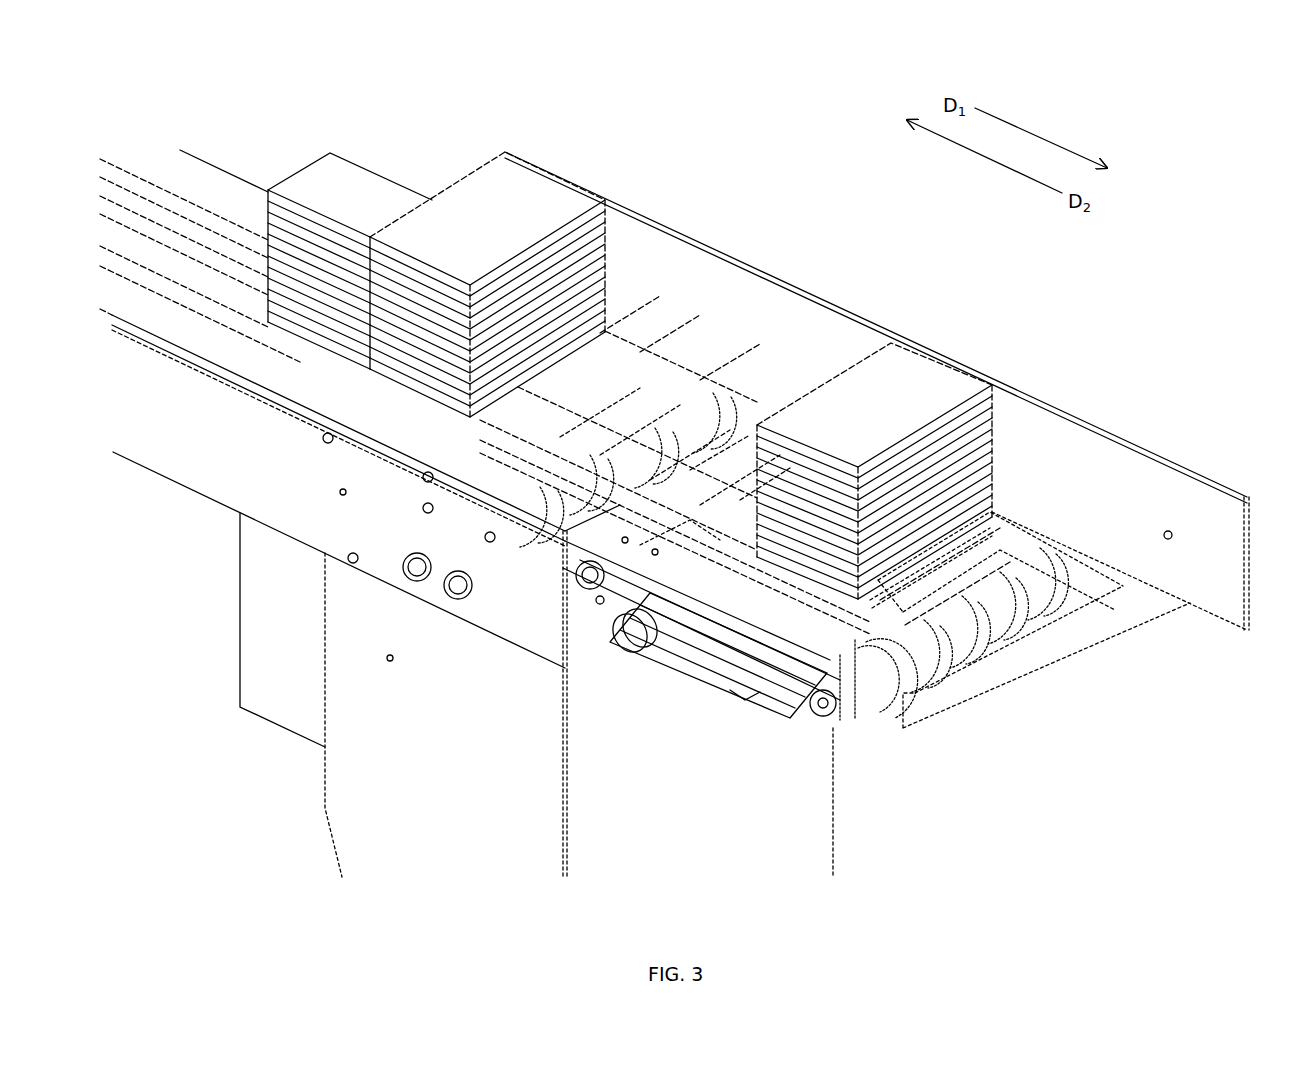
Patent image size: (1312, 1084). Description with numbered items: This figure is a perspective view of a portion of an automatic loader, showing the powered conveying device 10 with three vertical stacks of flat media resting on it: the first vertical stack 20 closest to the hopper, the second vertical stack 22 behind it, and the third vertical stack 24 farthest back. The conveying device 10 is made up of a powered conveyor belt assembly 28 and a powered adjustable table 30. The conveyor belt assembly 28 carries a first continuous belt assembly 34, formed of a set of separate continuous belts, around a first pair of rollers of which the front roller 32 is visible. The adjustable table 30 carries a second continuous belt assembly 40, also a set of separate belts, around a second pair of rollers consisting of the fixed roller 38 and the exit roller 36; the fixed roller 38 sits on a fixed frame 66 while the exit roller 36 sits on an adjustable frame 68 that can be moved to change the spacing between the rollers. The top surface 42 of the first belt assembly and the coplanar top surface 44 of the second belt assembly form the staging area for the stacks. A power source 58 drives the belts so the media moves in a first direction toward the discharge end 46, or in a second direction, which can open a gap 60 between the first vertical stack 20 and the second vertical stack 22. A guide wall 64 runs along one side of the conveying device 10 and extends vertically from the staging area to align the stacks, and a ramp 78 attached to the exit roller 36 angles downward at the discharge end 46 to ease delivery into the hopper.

The powered conveying device 10 is at (1203, 137).
The first vertical stack 20 is at (895, 385).
The second vertical stack 22 is at (506, 212).
The third vertical stack 24 is at (408, 168).
The powered conveyor belt assembly 28 is at (187, 432).
The powered adjustable table 30 is at (650, 550).
The front roller 32 is at (705, 420).
The first continuous belt assembly 34 is at (665, 355).
The exit roller 36 is at (1030, 598).
The fixed roller 38 is at (740, 445).
The second continuous belt assembly 40 is at (1052, 545).
The top surface 42 is at (230, 225).
The top surface 44 is at (935, 560).
The discharge end 46 is at (1075, 677).
The power source 58 is at (287, 642).
The gap 60 is at (705, 290).
The guide wall 64 is at (1138, 478).
The fixed frame 66 is at (722, 667).
The adjustable frame 68 is at (872, 672).
The ramp 78 is at (948, 690).